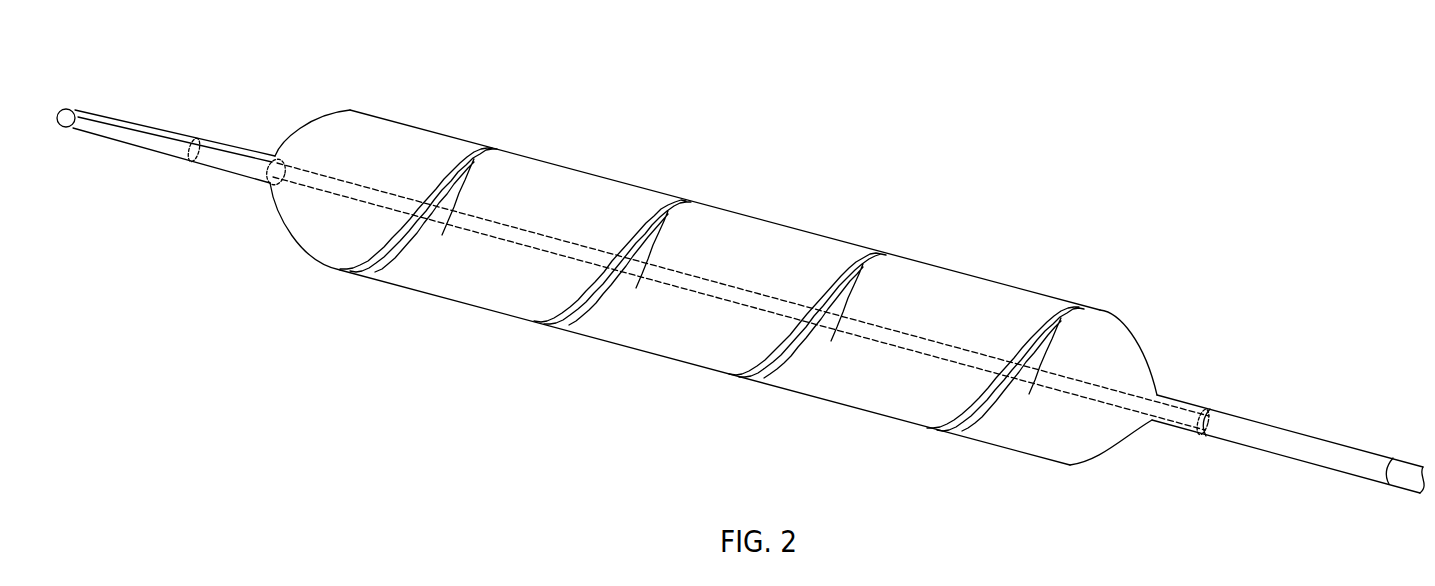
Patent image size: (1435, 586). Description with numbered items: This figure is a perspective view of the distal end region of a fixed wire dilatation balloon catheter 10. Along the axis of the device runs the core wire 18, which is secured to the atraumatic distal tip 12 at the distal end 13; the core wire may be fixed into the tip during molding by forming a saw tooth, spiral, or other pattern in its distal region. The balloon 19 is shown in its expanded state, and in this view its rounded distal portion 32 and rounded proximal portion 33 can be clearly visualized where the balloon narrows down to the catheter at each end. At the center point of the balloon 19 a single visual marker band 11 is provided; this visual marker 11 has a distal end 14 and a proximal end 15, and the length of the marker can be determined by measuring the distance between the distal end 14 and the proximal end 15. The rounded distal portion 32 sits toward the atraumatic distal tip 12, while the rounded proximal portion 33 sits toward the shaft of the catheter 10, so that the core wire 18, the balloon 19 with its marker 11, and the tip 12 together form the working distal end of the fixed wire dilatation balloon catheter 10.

The fixed wire dilatation balloon catheter 10 is at (894, 72).
The visual marker band 11 is at (683, 281).
The atraumatic distal tip 12 is at (70, 108).
The distal end 13 is at (128, 130).
The distal end 14 is at (651, 267).
The proximal end 15 is at (721, 286).
The core wire 18 is at (466, 219).
The balloon 19 is at (421, 128).
The rounded distal portion 32 is at (275, 156).
The rounded proximal portion 33 is at (1157, 394).